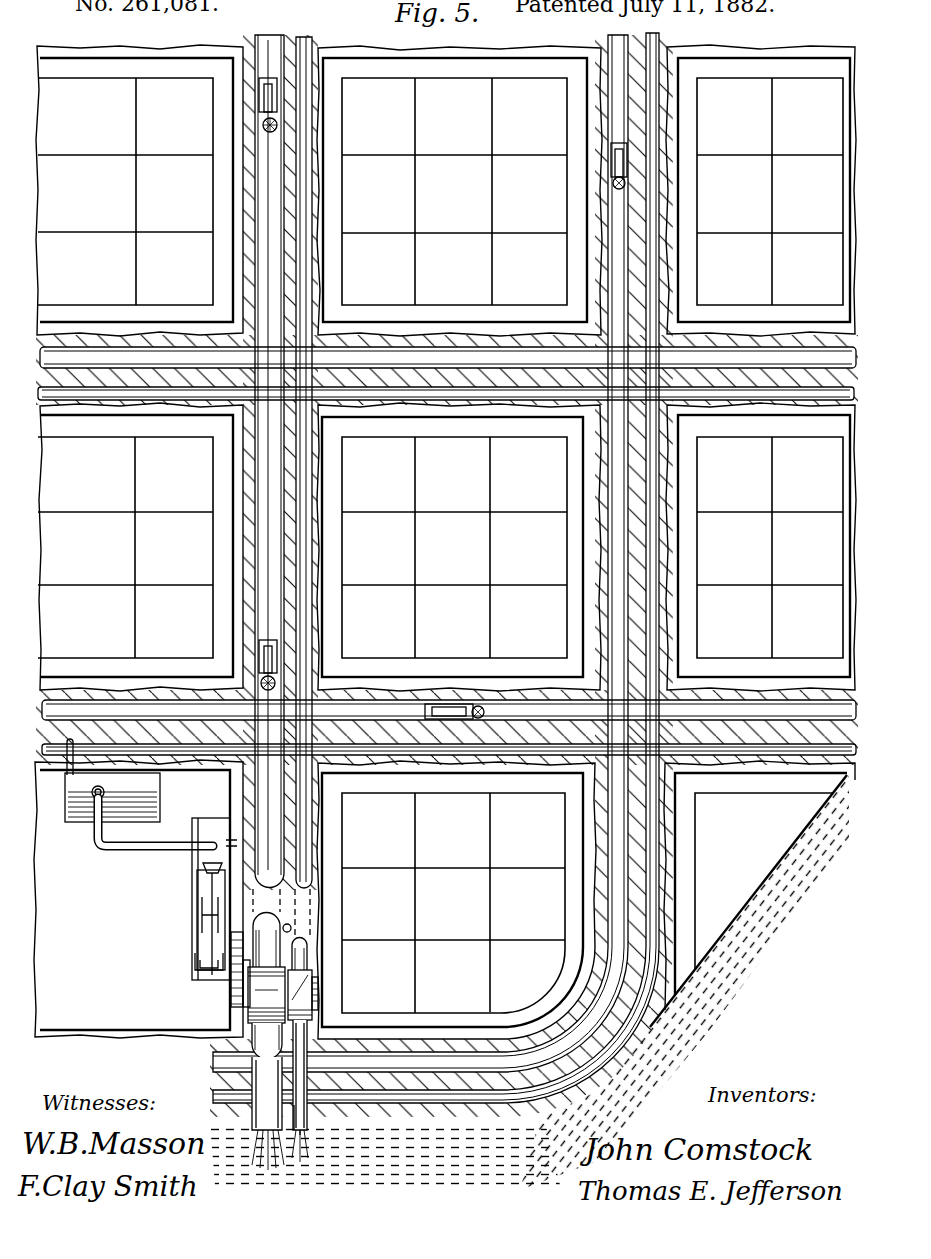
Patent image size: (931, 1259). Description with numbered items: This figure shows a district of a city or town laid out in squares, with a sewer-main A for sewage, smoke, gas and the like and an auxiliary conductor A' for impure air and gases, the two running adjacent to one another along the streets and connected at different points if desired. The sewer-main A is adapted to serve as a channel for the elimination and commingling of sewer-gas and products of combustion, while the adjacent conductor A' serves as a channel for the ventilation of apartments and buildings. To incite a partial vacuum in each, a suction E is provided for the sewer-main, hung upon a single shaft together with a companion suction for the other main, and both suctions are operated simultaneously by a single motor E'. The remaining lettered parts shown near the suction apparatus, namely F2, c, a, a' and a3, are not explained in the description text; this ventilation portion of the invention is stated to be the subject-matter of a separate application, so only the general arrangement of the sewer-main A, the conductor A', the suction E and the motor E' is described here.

The sewer-main A is at (448, 598).
The adjacent conductor A' is at (447, 568).
The suction E is at (257, 1029).
The motor E' is at (199, 899).
The pump cylinder F2 is at (309, 972).
The gear c is at (324, 993).
The cock a is at (291, 919).
The discharge pipe a' is at (316, 1117).
The outlet a3 is at (313, 1142).